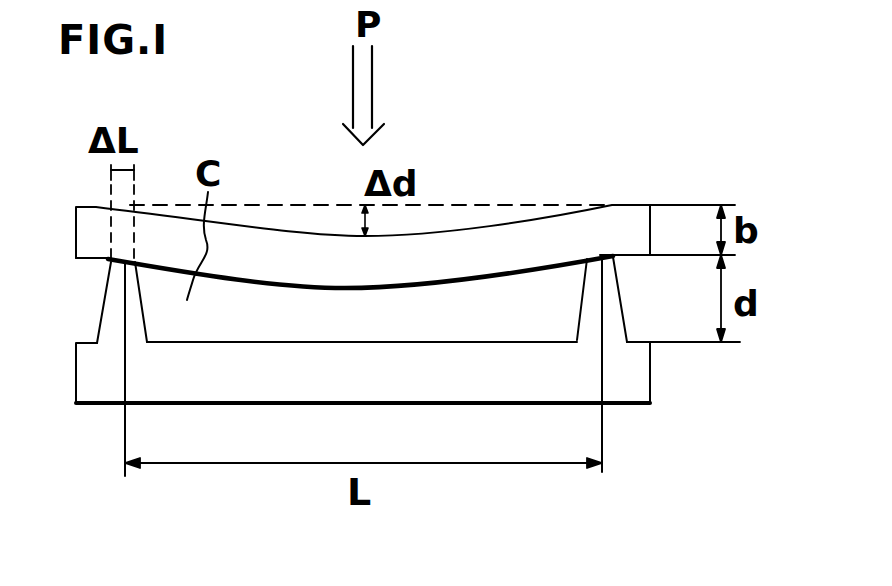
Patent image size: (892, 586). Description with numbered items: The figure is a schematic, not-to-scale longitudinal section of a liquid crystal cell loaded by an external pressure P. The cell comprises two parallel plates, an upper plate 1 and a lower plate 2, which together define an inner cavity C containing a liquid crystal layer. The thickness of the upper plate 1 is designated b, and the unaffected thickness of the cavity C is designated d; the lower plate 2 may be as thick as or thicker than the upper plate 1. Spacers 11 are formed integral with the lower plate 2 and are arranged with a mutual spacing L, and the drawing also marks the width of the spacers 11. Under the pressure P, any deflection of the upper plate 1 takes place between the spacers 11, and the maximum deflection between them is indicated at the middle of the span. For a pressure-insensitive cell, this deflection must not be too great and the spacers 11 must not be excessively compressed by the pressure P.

The upper plate 1 is at (76, 232).
The lower plate 2 is at (84, 372).
The spacers 11 is at (106, 303).